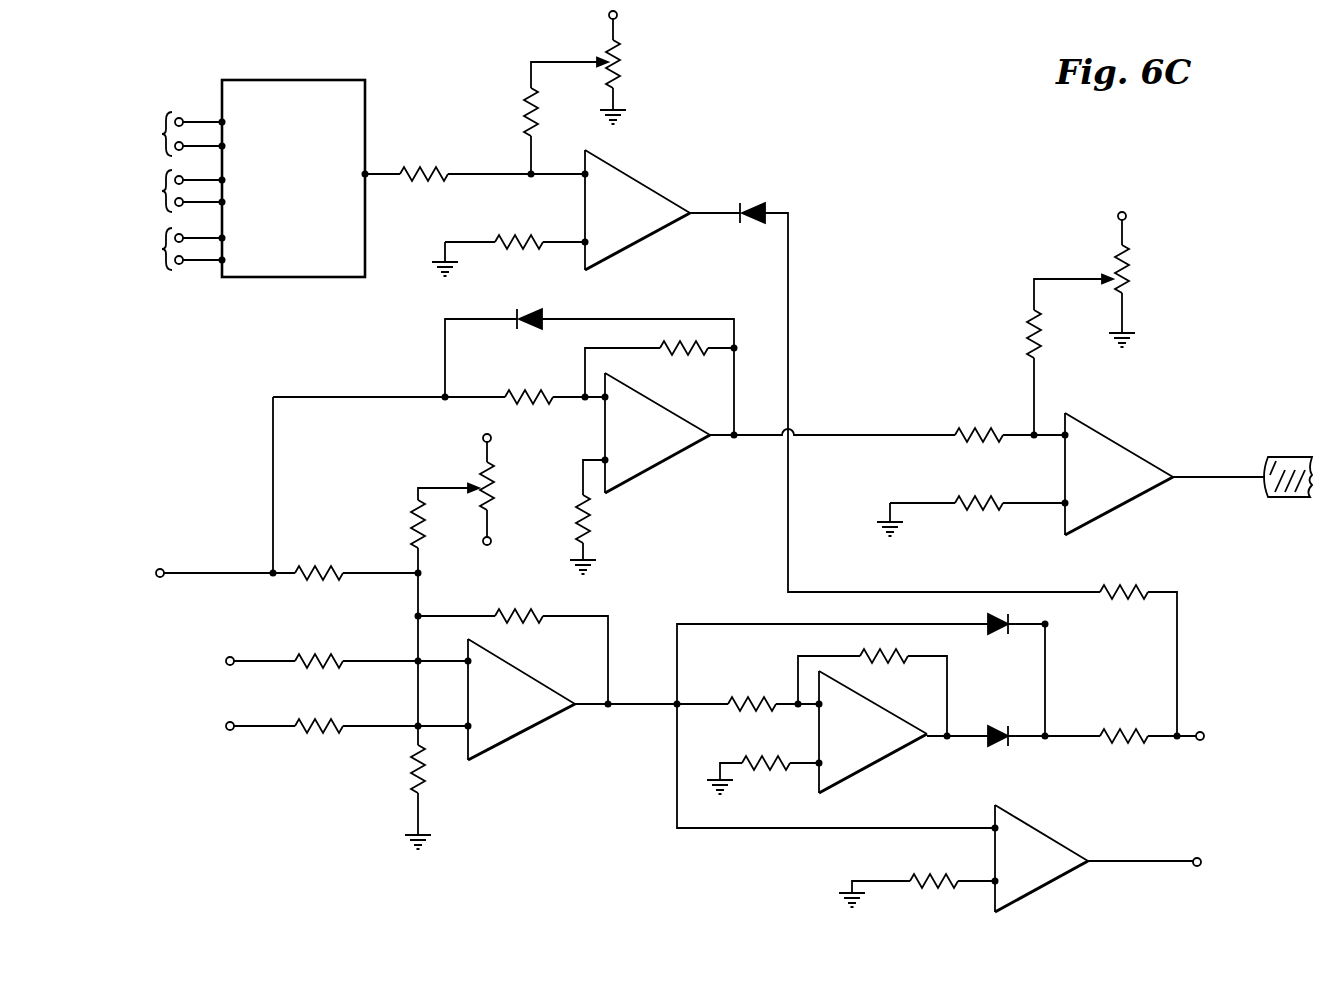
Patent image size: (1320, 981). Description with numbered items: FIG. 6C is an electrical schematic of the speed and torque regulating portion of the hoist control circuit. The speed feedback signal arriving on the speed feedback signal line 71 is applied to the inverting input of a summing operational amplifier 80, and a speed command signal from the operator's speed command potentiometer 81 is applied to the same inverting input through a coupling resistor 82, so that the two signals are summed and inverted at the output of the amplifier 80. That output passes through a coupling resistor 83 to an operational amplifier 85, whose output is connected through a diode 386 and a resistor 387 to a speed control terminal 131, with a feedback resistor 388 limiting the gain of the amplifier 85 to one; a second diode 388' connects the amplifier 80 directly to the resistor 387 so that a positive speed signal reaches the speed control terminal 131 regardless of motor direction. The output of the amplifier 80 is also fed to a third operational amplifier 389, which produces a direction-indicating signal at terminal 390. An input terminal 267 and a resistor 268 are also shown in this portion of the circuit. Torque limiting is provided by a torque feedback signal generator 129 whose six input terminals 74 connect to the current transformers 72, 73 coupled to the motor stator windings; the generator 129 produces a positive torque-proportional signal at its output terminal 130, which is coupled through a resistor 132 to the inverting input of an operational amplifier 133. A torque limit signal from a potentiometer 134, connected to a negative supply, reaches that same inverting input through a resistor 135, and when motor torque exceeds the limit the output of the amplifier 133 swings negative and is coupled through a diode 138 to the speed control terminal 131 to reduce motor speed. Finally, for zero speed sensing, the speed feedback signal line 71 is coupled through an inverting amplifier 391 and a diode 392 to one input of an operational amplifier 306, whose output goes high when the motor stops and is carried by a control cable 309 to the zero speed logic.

The torque feedback signal generator 129 is at (290, 80).
The input terminals 74 is at (181, 134).
The current transformer 72 is at (181, 191).
The current transformer 73 is at (181, 249).
The output terminal 130 is at (365, 174).
The resistor 132 is at (445, 172).
The resistor 135 is at (531, 112).
The potentiometer 134 is at (620, 60).
The operational amplifier 133 is at (586, 213).
The diode 138 is at (752, 205).
The diode 392 is at (535, 318).
The inverting amplifier 391 is at (614, 457).
The operational amplifier 306 is at (1071, 374).
The control cable 309 is at (1296, 458).
The speed feedback signal line 71 is at (160, 568).
The coupling resistor 82 is at (410, 530).
The speed command potentiometer 81 is at (495, 489).
The summing operational amplifier 80 is at (477, 711).
The input terminal 267 is at (228, 723).
The resistor 268 is at (331, 720).
The coupling resistor 83 is at (762, 700).
The operational amplifier 85 is at (847, 732).
The feedback resistor 388 is at (872, 692).
The second diode 388' is at (863, 667).
The diode 386 is at (996, 728).
The resistor 387 is at (1115, 730).
The speed control terminal 131 is at (1196, 732).
The third operational amplifier 389 is at (935, 808).
The terminal 390 is at (1200, 858).